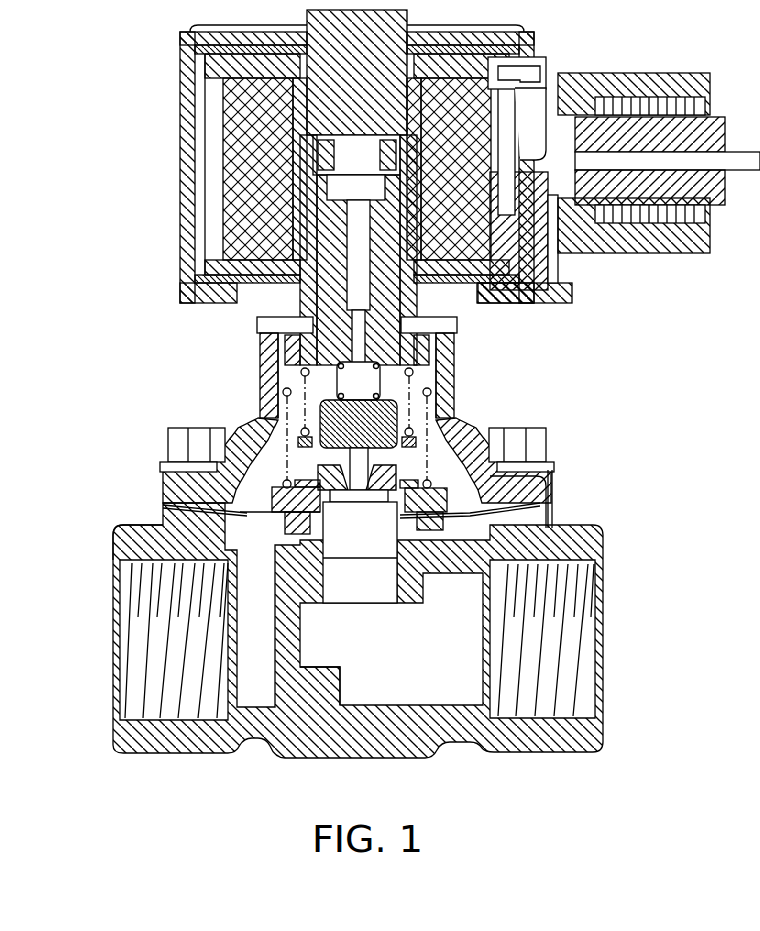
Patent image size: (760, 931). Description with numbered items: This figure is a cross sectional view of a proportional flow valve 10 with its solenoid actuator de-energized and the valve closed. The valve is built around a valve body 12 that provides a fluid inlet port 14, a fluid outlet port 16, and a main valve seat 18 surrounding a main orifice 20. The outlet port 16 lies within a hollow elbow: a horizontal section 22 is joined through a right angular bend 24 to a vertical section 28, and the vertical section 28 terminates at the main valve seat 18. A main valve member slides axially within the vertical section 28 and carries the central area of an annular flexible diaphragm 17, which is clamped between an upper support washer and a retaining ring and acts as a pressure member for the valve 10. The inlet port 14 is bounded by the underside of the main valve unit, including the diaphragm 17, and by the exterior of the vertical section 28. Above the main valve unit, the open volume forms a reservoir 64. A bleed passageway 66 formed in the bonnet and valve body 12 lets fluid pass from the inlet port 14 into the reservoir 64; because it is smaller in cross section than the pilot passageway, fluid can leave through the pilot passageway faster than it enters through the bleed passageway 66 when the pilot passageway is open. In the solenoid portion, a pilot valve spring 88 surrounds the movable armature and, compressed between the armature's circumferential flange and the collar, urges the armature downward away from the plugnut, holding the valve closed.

The proportional flow valve 10 is at (574, 351).
The valve body 12 is at (140, 530).
The fluid inlet port 14 is at (128, 706).
The fluid outlet port 16 is at (408, 698).
The annular flexible diaphragm 17 is at (659, 291).
The main valve seat 18 is at (288, 546).
The main orifice 20 is at (430, 540).
The horizontal section 22 is at (590, 670).
The right angular bend 24 is at (338, 668).
The vertical section 28 is at (360, 595).
The reservoir 64 is at (427, 440).
The bleed passageway 66 is at (556, 480).
The pilot valve spring 88 is at (458, 350).